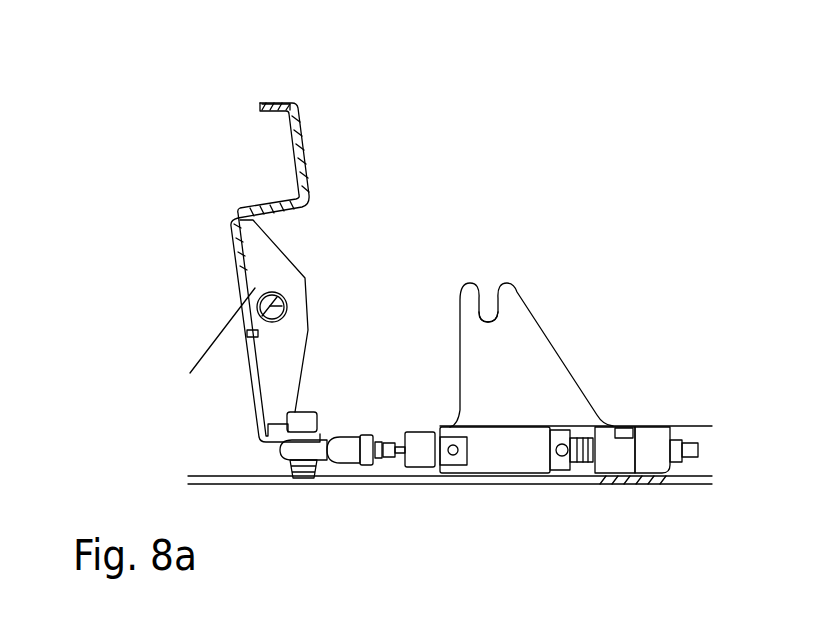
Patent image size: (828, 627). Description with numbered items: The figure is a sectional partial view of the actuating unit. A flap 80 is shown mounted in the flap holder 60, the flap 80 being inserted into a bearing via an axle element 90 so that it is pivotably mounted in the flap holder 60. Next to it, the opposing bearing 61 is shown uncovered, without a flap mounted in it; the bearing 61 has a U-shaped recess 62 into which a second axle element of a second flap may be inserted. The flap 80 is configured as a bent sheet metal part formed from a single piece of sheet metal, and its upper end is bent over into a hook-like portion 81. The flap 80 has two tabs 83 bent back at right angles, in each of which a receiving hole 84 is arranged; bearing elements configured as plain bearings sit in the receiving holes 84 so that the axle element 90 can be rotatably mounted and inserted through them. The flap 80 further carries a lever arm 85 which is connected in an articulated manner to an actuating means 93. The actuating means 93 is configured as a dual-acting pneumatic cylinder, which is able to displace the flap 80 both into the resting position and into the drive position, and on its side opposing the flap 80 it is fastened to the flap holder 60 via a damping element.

The flap holder 60 is at (540, 402).
The bearing 61 is at (523, 298).
The notch 62 is at (490, 307).
The flap 80 is at (233, 205).
The hook end 81 is at (298, 153).
The tabs 83 is at (262, 275).
The receiving hole 84 is at (240, 293).
The lever arm 85 is at (235, 390).
The axle element 90 is at (288, 302).
The actuating means 93 is at (507, 464).